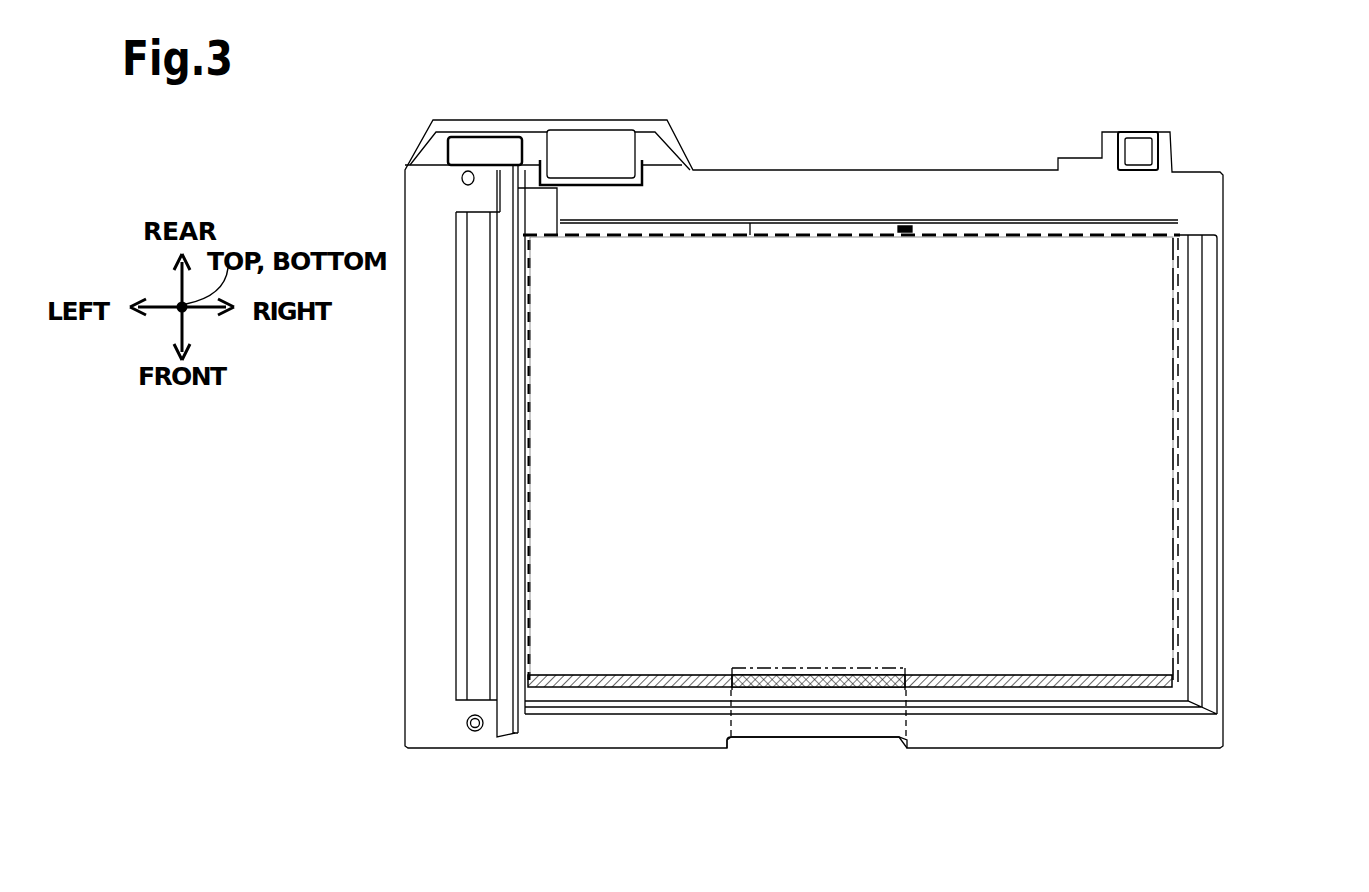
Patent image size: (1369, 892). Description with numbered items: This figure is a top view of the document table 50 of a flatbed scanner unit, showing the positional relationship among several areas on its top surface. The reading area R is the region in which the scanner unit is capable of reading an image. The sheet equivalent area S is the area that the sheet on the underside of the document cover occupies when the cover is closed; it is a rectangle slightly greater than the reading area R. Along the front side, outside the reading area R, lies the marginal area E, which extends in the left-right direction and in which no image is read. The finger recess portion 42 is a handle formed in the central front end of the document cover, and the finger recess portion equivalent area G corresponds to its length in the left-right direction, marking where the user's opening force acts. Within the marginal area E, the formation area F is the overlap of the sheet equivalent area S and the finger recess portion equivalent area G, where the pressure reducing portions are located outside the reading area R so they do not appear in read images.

The document table 50 is at (1237, 245).
The finger recess portion 42 is at (857, 765).
The reading area R is at (1172, 408).
The sheet equivalent area S is at (1178, 462).
The marginal area E is at (1028, 690).
The formation area F is at (780, 686).
The finger recess portion equivalent area G is at (733, 705).